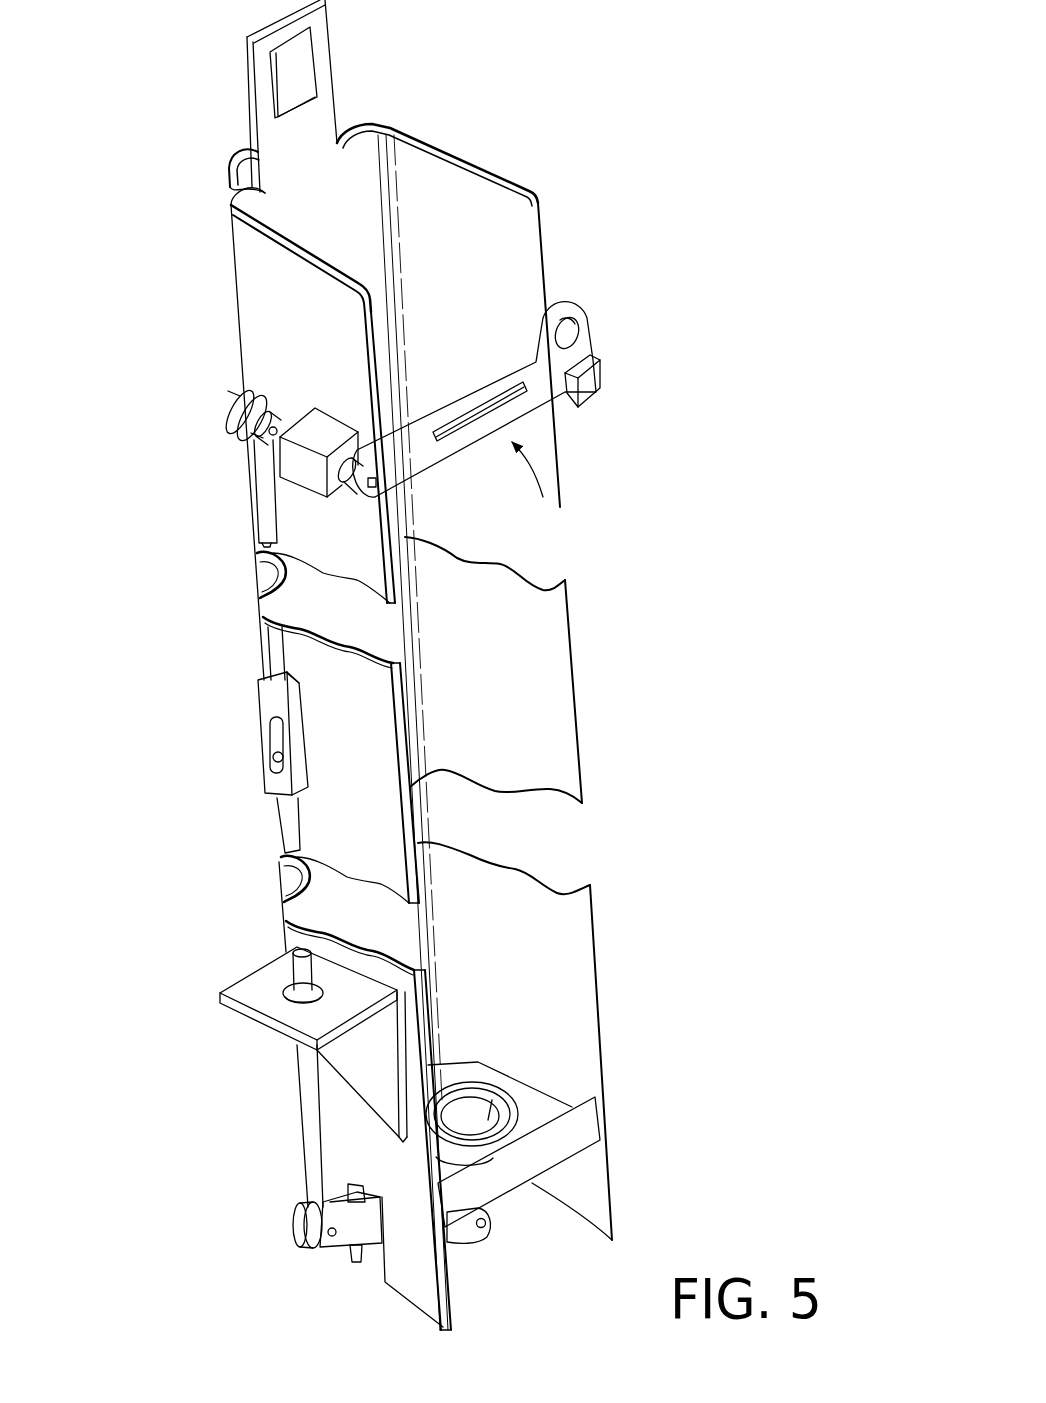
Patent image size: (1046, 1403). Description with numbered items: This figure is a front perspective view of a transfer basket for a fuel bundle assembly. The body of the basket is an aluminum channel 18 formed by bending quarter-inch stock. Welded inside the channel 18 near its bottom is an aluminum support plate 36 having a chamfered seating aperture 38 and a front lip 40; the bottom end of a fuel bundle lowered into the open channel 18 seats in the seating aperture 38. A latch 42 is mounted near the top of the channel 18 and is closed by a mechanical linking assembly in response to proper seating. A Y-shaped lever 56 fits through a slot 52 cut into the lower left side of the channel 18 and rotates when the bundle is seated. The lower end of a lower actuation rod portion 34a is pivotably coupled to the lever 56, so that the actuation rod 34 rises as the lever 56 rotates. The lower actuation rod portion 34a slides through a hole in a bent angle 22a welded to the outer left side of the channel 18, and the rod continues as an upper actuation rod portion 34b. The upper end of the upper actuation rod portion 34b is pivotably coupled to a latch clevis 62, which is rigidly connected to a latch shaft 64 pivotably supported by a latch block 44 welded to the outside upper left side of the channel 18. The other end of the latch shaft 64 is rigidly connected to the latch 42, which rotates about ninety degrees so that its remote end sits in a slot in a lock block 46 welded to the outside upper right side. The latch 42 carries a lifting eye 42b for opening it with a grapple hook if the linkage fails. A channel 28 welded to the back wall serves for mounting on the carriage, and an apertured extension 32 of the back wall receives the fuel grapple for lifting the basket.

The channel 18 is at (560, 690).
The channel 28 is at (226, 188).
The apertured extension 32 is at (340, 45).
The latch clevis 62 is at (233, 398).
The latch block 44 is at (307, 427).
The latch shaft 64 is at (350, 485).
The latch 42 is at (432, 480).
The lifting eye 42b is at (590, 317).
The lock block 46 is at (597, 393).
The upper actuation rod portion 34b is at (267, 497).
The actuation rod 34 is at (238, 655).
The lower actuation rod portion 34a is at (287, 817).
The bent angle 22a is at (255, 987).
The seating aperture 38 is at (468, 1095).
The front lip 40 is at (593, 1120).
The support plate 36 is at (500, 1195).
The Y-shaped lever 56 is at (370, 1232).
The slot 52 is at (322, 1291).